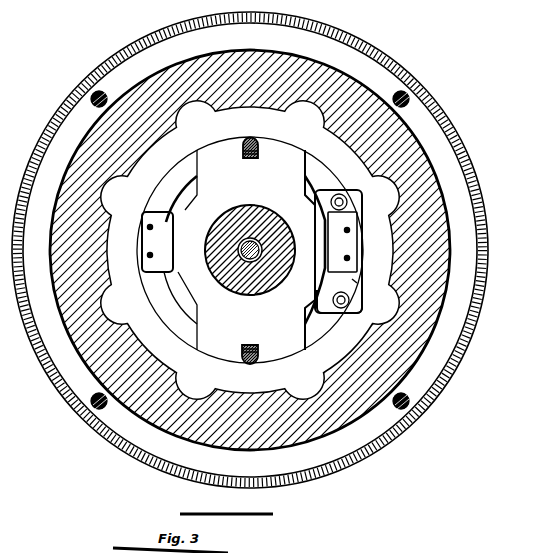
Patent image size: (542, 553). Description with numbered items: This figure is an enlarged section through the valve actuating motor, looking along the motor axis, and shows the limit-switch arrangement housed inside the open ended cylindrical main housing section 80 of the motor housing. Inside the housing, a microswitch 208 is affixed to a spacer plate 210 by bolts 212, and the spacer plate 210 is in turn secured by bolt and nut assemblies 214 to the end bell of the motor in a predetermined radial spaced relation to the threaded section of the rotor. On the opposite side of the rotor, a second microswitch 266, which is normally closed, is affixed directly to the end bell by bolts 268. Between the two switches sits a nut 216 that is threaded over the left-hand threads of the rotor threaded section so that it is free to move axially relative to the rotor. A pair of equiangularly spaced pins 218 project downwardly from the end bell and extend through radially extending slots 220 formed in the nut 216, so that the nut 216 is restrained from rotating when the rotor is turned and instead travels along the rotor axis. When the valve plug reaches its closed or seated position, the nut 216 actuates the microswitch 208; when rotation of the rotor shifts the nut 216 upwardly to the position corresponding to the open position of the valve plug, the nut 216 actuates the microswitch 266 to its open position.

The main housing section 80 is at (463, 136).
The pins 218 is at (250, 160).
The slots 220 is at (250, 138).
The nut 216 is at (305, 172).
The bolt and nut assemblies 214 is at (342, 310).
The microswitch 208 is at (350, 230).
The bolts 212 is at (349, 258).
The spacer plate 210 is at (355, 282).
The microswitch 266 is at (174, 233).
The bolts 268 is at (148, 256).